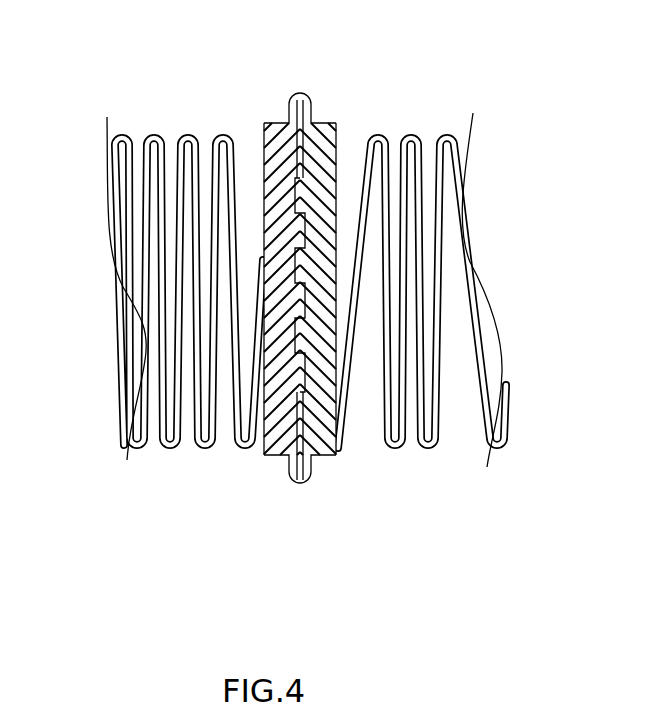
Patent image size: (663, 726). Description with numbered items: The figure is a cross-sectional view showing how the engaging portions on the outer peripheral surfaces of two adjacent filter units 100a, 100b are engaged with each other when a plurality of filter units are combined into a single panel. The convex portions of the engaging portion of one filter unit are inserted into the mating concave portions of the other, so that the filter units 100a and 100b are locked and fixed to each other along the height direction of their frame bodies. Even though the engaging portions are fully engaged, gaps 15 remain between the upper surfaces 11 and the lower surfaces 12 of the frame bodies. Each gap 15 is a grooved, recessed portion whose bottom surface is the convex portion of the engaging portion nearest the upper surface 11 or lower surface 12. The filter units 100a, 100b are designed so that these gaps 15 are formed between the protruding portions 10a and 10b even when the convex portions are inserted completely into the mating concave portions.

The filter unit 100a is at (135, 103).
The filter unit 100b is at (445, 103).
The protruding portion 10a is at (291, 101).
The protruding portion 10b is at (310, 101).
The gap 15 is at (300, 100).
The upper surface 11 is at (336, 126).
The lower surface 12 is at (326, 458).